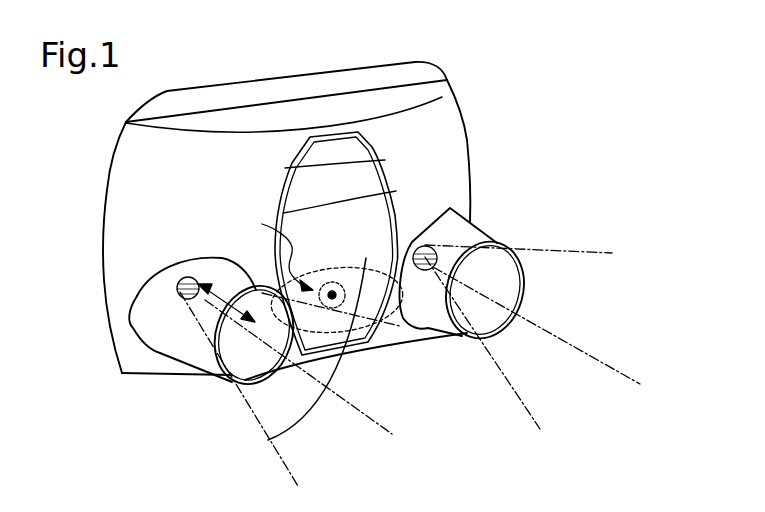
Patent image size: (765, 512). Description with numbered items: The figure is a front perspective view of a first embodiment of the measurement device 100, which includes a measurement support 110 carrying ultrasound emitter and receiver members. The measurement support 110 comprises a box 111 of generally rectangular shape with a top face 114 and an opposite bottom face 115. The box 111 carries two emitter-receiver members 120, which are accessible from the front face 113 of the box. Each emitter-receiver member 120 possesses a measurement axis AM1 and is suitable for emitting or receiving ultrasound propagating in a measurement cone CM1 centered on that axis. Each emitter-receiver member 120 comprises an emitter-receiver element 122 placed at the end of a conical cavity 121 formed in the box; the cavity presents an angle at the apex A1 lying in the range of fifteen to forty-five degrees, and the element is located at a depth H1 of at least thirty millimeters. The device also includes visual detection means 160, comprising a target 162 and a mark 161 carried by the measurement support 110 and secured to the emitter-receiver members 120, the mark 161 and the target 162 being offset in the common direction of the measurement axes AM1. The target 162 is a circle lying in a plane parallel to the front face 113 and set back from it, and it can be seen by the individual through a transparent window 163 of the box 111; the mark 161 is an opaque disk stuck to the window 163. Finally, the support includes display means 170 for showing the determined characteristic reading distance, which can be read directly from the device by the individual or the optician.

The measurement device 100 is at (583, 116).
The measurement support 110 is at (103, 250).
The box 111 is at (118, 168).
The front face 113 is at (288, 143).
The top face 114 is at (368, 78).
The bottom face 115 is at (356, 362).
The emitter-receiver member 120 is at (222, 388).
The conical cavity 121 is at (177, 338).
The emitter-receiver element 122 is at (184, 279).
The visual detection means 160 is at (265, 247).
The mark 161 is at (345, 293).
The target 162 is at (337, 276).
The transparent window 163 is at (372, 303).
The display means 170 is at (375, 183).
The depth H1 is at (225, 300).
The angle at the apex A1 is at (303, 424).
The measurement axis AM1 is at (388, 422).
The measurement cone CM1 is at (280, 458).